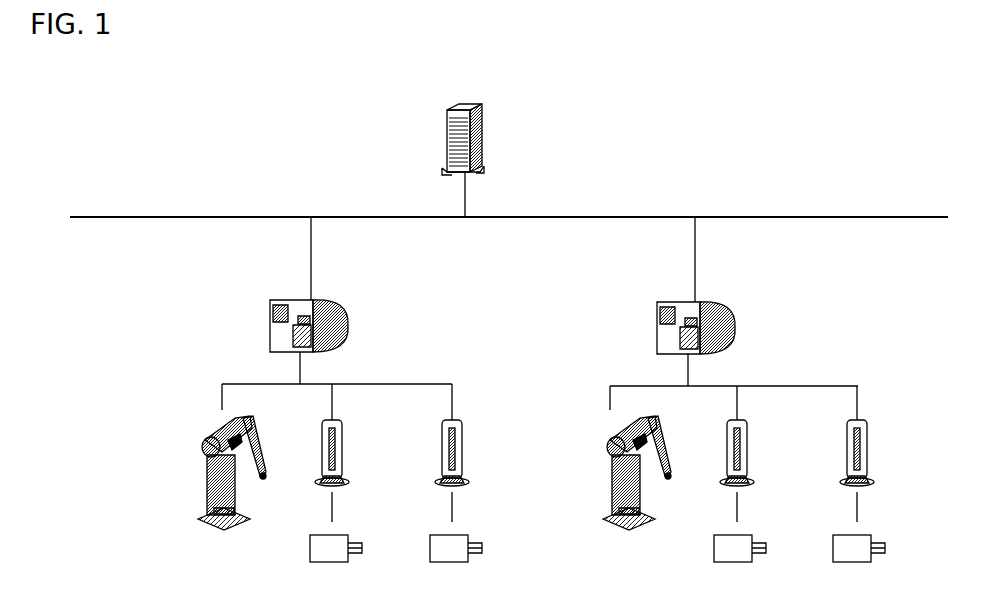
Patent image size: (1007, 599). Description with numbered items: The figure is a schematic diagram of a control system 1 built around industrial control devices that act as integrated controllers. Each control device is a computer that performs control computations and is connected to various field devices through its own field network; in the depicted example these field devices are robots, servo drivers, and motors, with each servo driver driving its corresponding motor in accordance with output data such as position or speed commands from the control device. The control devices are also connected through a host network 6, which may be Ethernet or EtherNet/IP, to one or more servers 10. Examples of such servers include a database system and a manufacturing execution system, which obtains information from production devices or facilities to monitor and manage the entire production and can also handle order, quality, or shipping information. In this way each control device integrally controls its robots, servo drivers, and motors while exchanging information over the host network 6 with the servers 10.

The control system 1 is at (864, 91).
The host network 6 is at (610, 217).
The server 10 is at (480, 108).